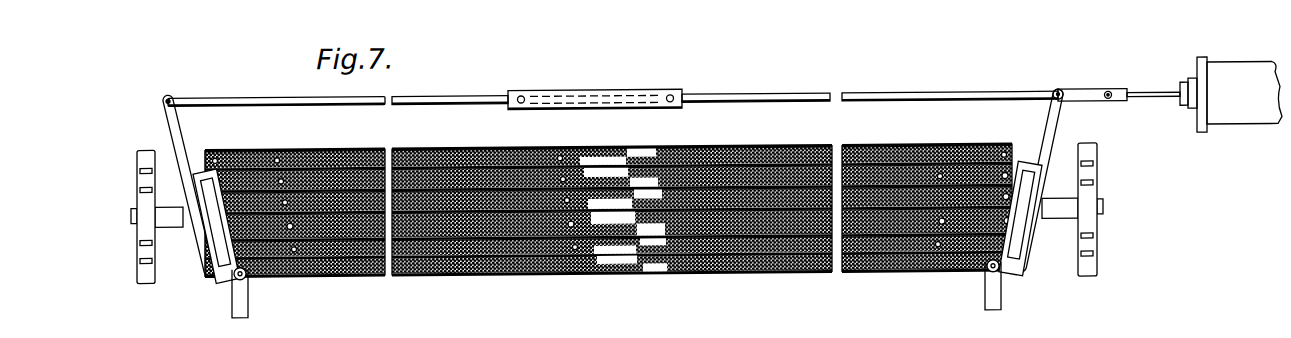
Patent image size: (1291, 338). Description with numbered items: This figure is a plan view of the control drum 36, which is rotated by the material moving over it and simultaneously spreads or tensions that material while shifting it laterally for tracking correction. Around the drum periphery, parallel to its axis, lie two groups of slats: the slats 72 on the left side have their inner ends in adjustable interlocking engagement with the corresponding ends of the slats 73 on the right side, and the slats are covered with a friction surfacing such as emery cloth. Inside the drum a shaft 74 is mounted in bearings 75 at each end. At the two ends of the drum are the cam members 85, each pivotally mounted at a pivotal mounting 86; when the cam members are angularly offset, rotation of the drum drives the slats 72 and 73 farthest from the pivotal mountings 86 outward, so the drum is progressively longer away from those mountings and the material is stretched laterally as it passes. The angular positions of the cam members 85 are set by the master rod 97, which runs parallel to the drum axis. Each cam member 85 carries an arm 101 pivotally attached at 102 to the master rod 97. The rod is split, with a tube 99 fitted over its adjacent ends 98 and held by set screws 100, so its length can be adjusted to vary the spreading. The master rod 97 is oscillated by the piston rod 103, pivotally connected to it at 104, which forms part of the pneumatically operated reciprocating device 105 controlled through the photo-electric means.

The control drum 36 is at (610, 227).
The slats 72 is at (515, 228).
The slats 73 is at (900, 224).
The shaft 74 is at (1065, 215).
The bearings 75 is at (142, 231).
The cam members 85 is at (218, 283).
The pivotal mountings 86 is at (250, 283).
The master rod 97 is at (445, 99).
The adjacent ends 98 is at (620, 102).
The tube 99 is at (590, 107).
The set screws 100 is at (521, 98).
The arm 101 is at (168, 122).
The pivotal attachment 102 is at (1059, 96).
The piston rod 103 is at (1152, 100).
The pivotal connection 104 is at (1108, 95).
The pneumatically operated reciprocating device 105 is at (1233, 136).